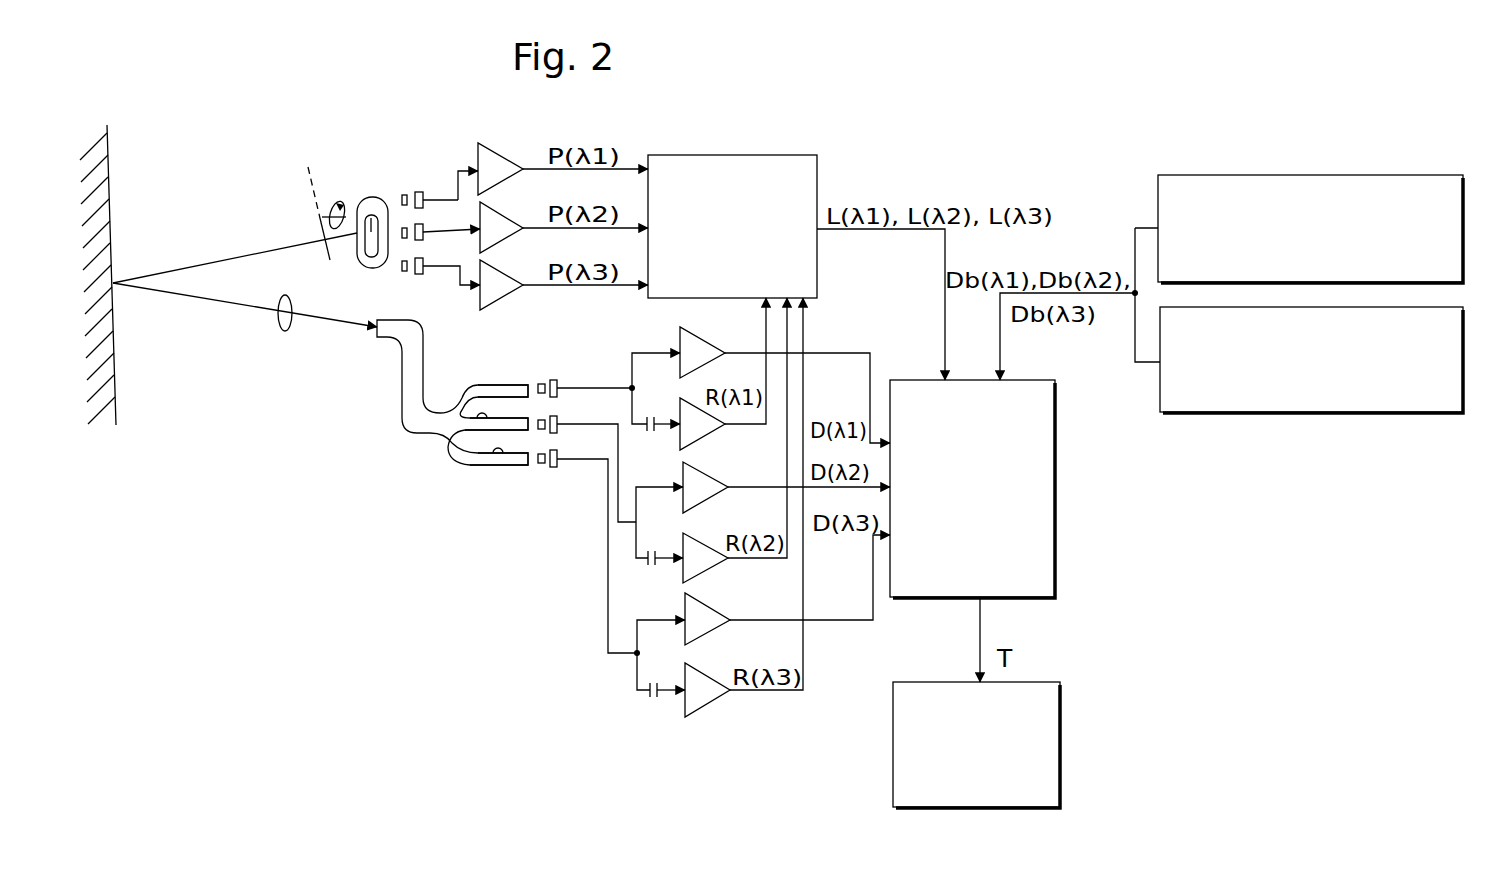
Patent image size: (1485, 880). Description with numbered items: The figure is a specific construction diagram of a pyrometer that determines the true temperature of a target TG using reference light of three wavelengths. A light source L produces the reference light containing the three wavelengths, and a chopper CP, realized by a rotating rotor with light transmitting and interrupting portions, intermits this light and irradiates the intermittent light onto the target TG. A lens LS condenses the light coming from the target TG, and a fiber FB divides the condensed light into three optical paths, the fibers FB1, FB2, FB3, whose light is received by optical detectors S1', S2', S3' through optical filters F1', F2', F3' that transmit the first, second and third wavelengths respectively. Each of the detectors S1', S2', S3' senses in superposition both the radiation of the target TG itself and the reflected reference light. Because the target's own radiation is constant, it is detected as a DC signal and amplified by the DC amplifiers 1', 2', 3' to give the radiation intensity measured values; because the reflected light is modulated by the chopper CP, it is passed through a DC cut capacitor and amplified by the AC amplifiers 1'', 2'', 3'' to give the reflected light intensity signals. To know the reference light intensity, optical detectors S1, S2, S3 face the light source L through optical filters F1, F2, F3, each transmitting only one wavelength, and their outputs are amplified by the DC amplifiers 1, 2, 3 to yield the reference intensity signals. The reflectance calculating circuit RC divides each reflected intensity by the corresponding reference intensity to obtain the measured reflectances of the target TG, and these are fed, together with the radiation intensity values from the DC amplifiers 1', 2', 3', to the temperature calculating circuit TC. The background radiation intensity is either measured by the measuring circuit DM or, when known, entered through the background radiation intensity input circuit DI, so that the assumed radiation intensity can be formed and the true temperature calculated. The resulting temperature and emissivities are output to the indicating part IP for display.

The target TG is at (108, 147).
The lens LS is at (280, 332).
The chopper CP is at (308, 213).
The light source L is at (372, 217).
The optical filter F1 is at (406, 180).
The optical filter F2 is at (366, 268).
The optical filter F3 is at (407, 285).
The optical detector S1 is at (446, 181).
The optical detector S2 is at (447, 220).
The optical detector S3 is at (447, 259).
The DC amplifier 1 is at (500, 169).
The DC amplifier 2 is at (501, 227).
The DC amplifier 3 is at (501, 285).
The reflectance calculating circuit RC is at (762, 152).
The background radiation intensity measuring circuit DM is at (1253, 168).
The background radiation intensity input circuit DI is at (1261, 415).
The temperature calculating circuit TC is at (1055, 527).
The indicating part IP is at (1060, 742).
The fiber FB is at (452, 392).
The fiber FB1 is at (481, 383).
The fiber FB2 is at (462, 432).
The fiber FB3 is at (488, 458).
The optical filter F1' is at (548, 369).
The optical filter F2' is at (524, 478).
The optical filter F3' is at (554, 478).
The optical detector S1' is at (592, 379).
The optical detector S2' is at (593, 459).
The optical detector S3' is at (595, 544).
The DC amplifier 1' is at (678, 357).
The AC amplifier 1'' is at (678, 419).
The DC amplifier 2' is at (682, 492).
The AC amplifier 2'' is at (682, 552).
The DC amplifier 3' is at (683, 623).
The AC amplifier 3'' is at (683, 685).